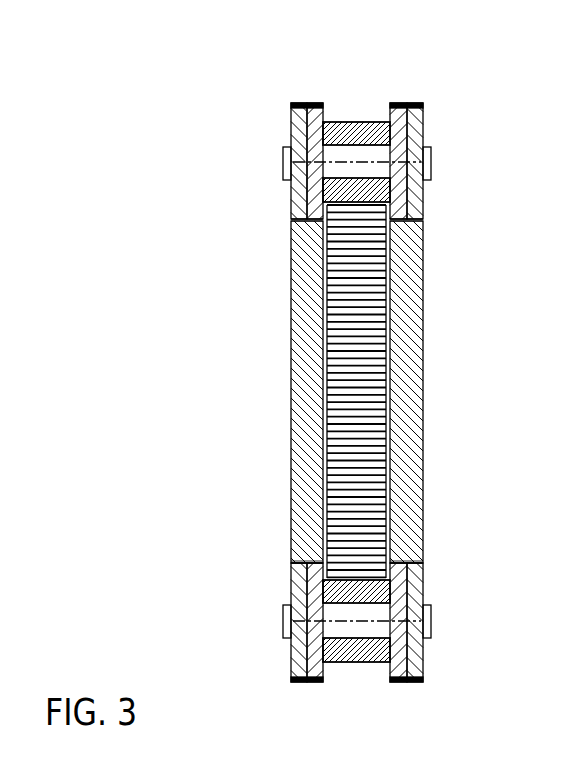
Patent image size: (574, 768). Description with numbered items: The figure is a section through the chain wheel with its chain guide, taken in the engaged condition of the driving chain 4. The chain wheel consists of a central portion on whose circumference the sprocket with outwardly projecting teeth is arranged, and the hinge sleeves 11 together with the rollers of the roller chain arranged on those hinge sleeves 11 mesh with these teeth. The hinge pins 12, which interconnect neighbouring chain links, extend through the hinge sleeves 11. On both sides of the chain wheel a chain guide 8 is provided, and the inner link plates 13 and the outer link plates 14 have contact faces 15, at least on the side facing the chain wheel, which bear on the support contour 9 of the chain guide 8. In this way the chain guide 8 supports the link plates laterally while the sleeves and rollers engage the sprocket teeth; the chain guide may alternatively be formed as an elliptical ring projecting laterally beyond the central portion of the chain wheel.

The driving chain 4 is at (466, 118).
The chain guide 8 is at (300, 407).
The support contour 9 is at (424, 207).
The hinge sleeve 11 is at (377, 152).
The hinge pin 12 is at (347, 122).
The inner link plate 13 is at (310, 103).
The outer link plate 14 is at (298, 103).
The contact face 15 is at (297, 232).